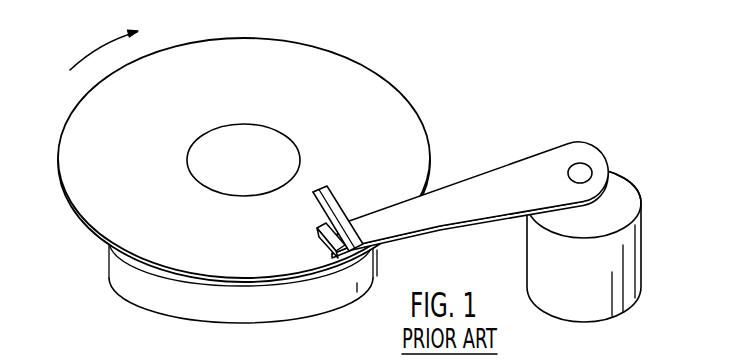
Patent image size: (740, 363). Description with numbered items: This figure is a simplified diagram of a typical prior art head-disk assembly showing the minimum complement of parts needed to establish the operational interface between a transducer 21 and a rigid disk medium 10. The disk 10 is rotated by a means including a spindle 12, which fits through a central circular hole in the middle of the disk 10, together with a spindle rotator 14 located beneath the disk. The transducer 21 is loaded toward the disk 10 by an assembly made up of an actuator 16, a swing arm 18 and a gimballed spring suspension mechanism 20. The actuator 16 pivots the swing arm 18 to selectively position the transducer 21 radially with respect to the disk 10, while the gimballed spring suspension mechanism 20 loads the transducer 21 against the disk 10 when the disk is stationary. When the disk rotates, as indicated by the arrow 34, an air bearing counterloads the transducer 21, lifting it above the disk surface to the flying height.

The rigid disk medium 10 is at (330, 62).
The spindle 12 is at (248, 128).
The spindle rotator 14 is at (175, 307).
The actuator 16 is at (640, 260).
The swing arm 18 is at (475, 178).
The gimballed spring suspension mechanism 20 is at (332, 202).
The transducer 21 is at (309, 199).
The direction of rotation arrow 34 is at (93, 50).